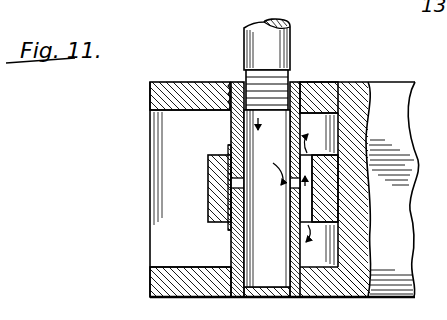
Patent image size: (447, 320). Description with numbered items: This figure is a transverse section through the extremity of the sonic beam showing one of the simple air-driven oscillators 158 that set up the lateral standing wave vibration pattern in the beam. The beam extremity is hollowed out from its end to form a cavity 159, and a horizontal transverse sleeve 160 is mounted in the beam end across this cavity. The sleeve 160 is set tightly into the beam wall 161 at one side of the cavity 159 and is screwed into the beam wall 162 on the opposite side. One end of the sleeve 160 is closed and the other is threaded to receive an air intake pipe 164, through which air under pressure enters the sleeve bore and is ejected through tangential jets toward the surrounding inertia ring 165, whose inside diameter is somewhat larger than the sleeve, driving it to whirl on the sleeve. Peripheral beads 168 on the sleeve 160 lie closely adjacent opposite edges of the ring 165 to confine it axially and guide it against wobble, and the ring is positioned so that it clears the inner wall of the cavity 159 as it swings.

The beam wall 162 is at (150, 97).
The beam wall 161 is at (152, 286).
The cavity 159 is at (237, 130).
The sleeve 160 is at (228, 148).
The peripheral beads 168 is at (207, 157).
The inertia ring 165 is at (207, 203).
The air-driven oscillator 158 is at (191, 218).
The air intake pipe 164 is at (290, 43).